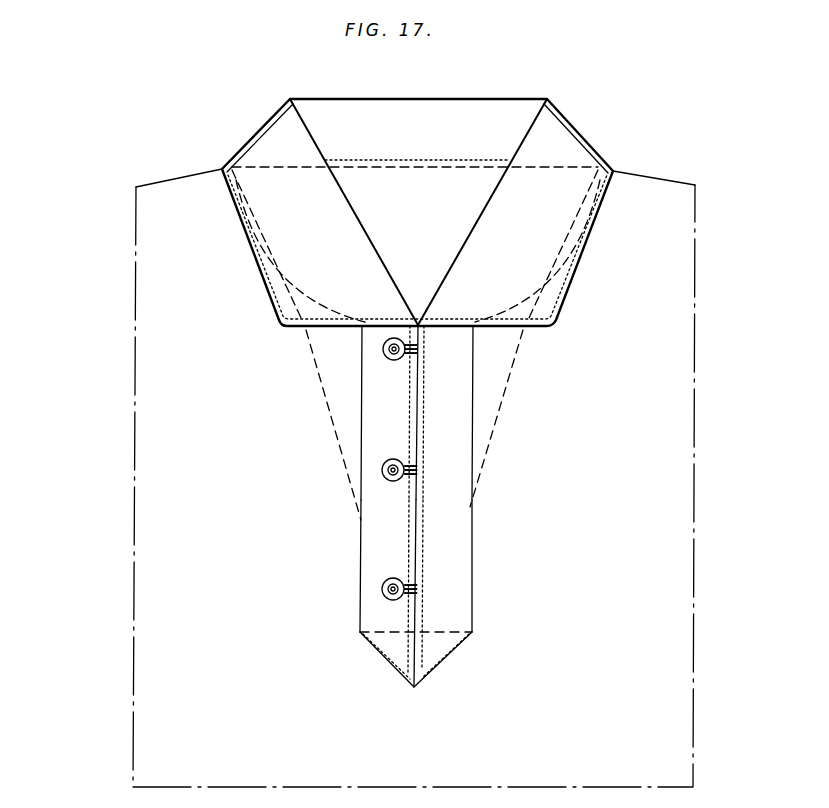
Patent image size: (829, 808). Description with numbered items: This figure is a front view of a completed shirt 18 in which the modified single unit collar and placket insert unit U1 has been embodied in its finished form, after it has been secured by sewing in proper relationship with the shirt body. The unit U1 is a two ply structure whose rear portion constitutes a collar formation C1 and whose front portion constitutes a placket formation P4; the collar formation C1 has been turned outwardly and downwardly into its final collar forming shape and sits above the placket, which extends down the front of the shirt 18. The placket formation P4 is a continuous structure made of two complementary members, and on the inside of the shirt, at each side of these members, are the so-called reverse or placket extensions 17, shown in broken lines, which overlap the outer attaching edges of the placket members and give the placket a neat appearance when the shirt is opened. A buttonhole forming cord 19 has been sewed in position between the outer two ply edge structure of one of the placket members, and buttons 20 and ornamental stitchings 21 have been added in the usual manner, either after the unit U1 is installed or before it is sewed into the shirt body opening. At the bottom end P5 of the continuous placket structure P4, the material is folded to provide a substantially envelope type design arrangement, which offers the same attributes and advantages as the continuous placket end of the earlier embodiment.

The placket extensions 17 is at (332, 406).
The shirt 18 is at (107, 495).
The buttonhole forming cord 19 is at (408, 462).
The buttons 20 is at (383, 354).
The ornamental stitchings 21 is at (280, 299).
The collar formation C1 is at (602, 222).
The unit U1 is at (474, 420).
The placket formation P4 is at (485, 493).
The bottom end of placket P5 is at (408, 668).